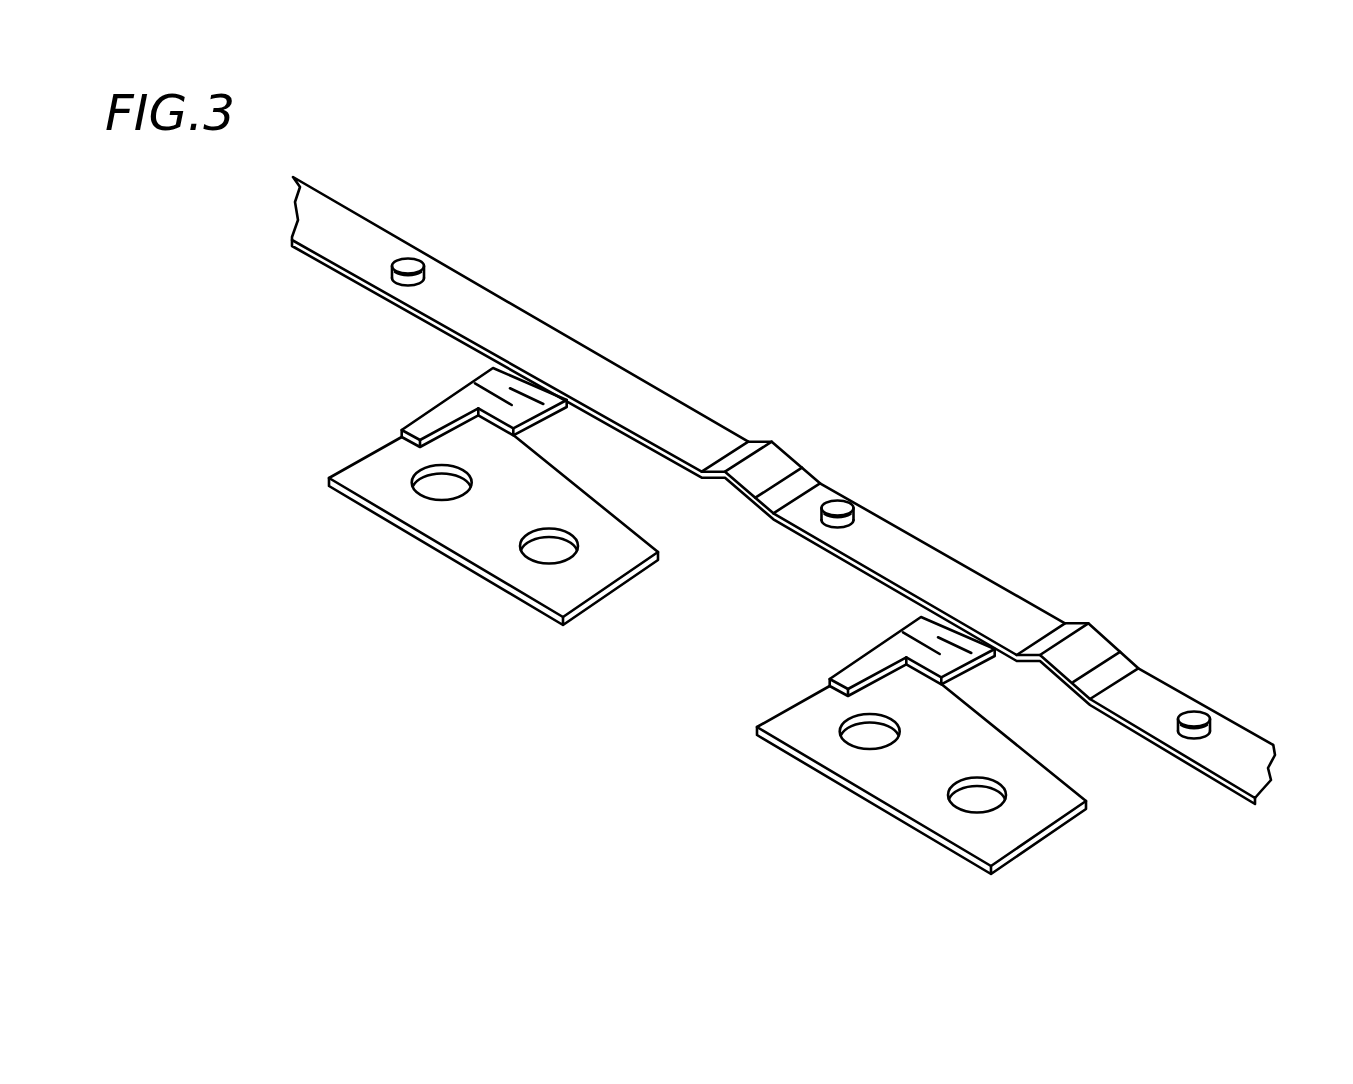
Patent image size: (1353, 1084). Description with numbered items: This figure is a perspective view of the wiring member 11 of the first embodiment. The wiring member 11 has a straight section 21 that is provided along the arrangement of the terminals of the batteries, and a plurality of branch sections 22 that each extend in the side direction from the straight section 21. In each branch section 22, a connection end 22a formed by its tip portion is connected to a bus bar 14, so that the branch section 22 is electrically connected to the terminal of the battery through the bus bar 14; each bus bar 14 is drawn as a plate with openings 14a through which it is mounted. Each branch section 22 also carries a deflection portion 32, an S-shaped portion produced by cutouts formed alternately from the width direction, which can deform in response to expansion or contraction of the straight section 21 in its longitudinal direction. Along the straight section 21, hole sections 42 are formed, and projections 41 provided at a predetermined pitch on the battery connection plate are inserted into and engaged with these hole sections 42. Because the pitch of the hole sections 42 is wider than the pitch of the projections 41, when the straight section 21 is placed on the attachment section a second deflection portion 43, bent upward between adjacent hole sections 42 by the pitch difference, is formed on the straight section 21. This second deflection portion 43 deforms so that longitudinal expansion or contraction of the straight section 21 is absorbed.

The wiring member 11 is at (529, 241).
The straight section 21 is at (668, 383).
The branch section 22 is at (440, 386).
The connection end 22a is at (422, 427).
The deflection portion 32 is at (557, 430).
The projection 41 is at (405, 266).
The hole section 42 is at (418, 283).
The second deflection portion 43 is at (781, 454).
The bus bar 14 is at (448, 557).
The through hole 14a is at (433, 495).